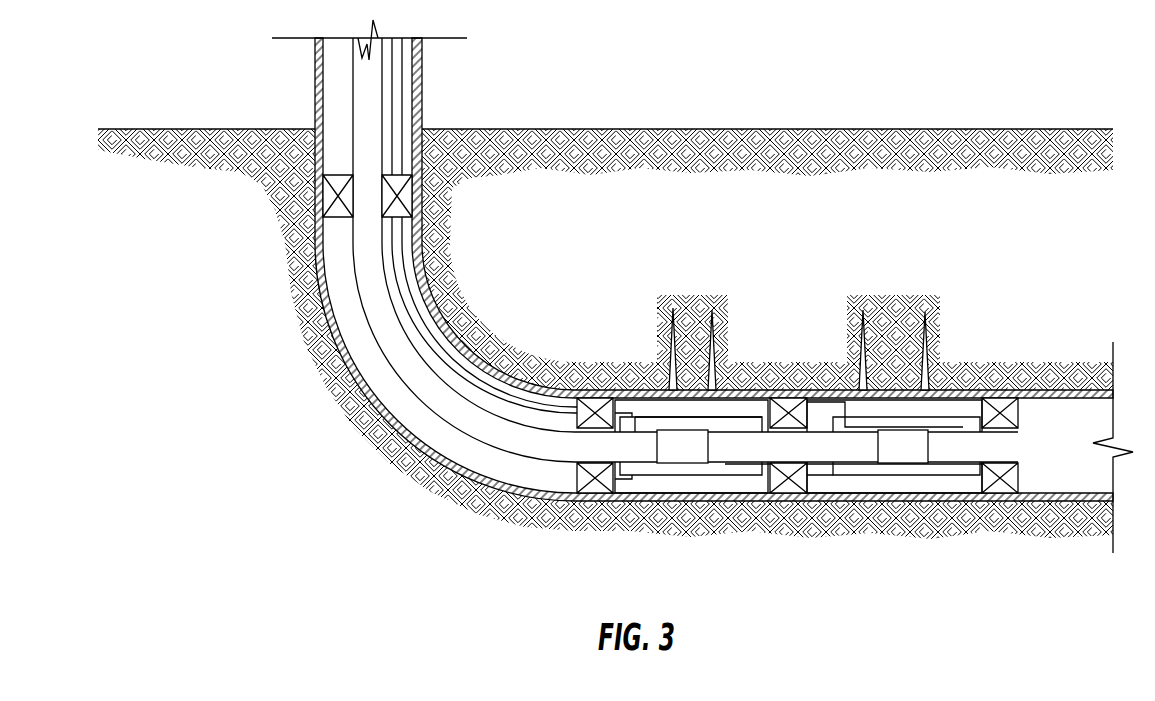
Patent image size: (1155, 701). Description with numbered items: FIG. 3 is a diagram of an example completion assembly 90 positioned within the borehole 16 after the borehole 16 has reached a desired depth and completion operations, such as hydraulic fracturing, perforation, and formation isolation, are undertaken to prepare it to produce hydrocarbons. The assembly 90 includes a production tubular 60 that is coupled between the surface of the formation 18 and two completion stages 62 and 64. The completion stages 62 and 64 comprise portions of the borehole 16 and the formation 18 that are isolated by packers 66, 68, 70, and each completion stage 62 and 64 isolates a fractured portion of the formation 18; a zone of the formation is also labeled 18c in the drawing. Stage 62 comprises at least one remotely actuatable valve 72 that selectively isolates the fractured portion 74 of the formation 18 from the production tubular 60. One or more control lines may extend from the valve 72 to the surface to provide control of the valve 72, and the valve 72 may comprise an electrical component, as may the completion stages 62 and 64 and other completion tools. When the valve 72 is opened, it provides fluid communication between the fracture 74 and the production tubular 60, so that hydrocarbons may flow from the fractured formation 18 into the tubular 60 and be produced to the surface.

The borehole 16 is at (328, 308).
The formation 18 is at (958, 45).
The formation zone 18c is at (650, 99).
The production tubular 60 is at (380, 336).
The completion stage 62 is at (694, 459).
The completion stage 64 is at (982, 540).
The packer 66 is at (598, 394).
The packer 68 is at (790, 393).
The packer 70 is at (1000, 393).
The remotely actuatable valve 72 is at (731, 415).
The fractured portion 74 is at (674, 318).
The completion assembly 90 is at (276, 98).